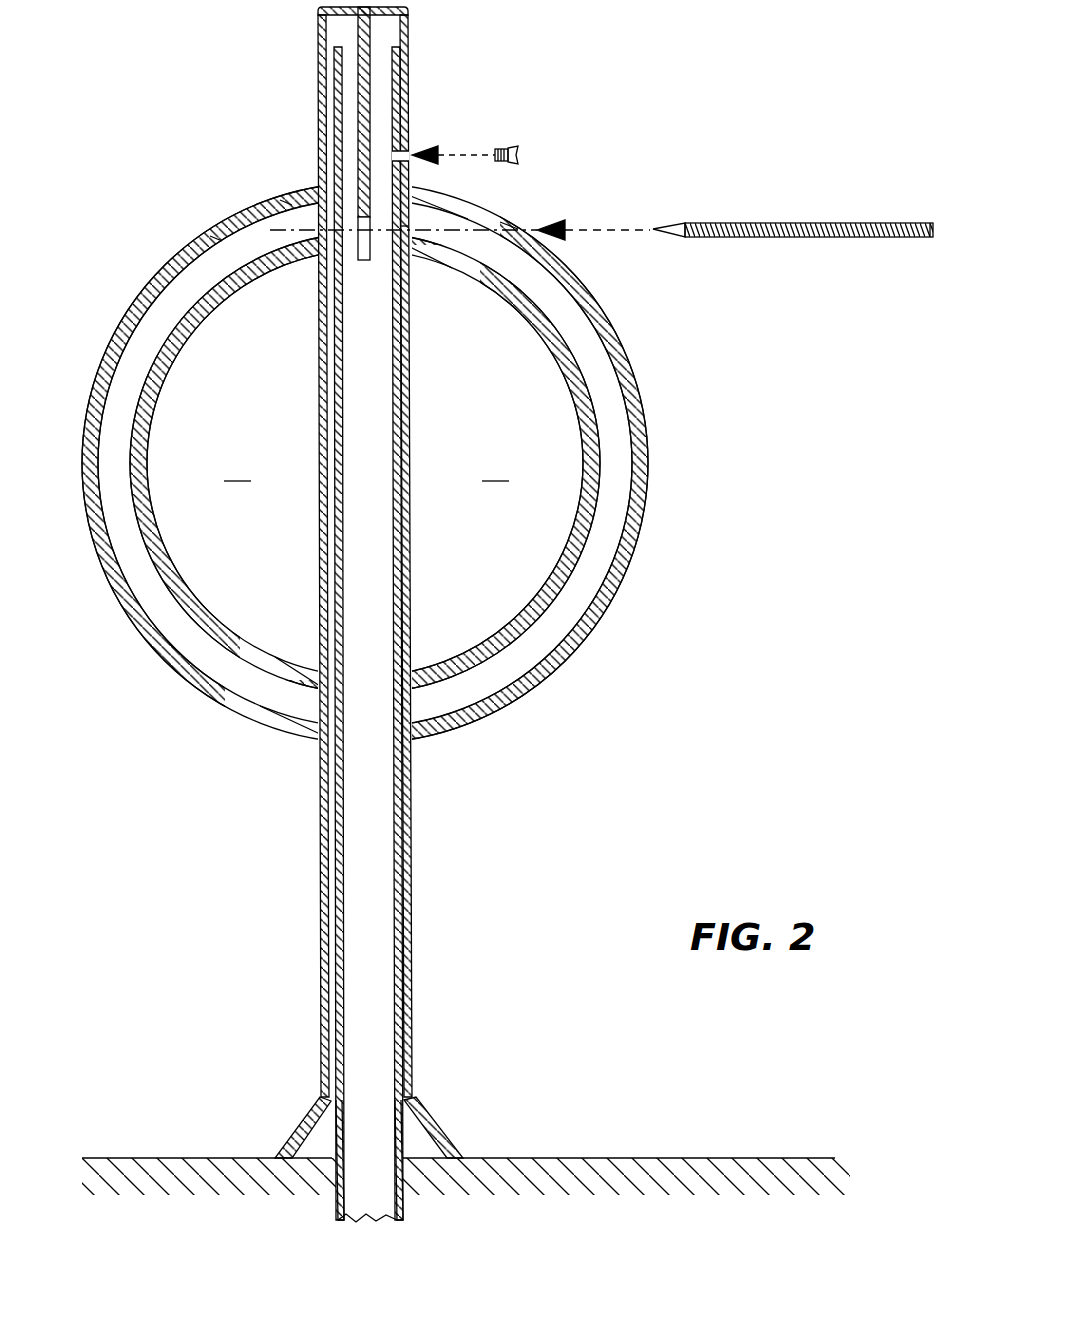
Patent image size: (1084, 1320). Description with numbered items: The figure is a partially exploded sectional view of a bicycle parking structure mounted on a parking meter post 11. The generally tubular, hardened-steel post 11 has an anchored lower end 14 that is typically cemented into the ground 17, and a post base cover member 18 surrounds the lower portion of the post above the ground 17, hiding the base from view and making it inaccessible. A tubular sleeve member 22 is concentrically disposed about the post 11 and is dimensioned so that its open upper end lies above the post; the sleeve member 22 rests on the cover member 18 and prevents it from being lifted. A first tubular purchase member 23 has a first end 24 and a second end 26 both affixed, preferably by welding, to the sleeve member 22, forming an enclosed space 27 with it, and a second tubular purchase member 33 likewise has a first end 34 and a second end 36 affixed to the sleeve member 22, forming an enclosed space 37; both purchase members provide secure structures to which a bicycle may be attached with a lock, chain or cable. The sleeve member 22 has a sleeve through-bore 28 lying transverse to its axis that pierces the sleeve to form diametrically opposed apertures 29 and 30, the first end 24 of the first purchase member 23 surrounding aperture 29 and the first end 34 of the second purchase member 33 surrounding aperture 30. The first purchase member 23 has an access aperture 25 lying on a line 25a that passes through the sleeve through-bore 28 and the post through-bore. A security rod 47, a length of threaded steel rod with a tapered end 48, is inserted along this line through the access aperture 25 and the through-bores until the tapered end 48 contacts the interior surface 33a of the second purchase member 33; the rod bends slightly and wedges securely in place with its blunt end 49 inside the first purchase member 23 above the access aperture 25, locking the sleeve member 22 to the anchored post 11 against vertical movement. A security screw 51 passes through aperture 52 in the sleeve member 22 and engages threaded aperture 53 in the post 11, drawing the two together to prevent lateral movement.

The parking meter post 11 is at (384, 866).
The anchored lower end 14 is at (403, 1196).
The ground 17 is at (485, 1158).
The post base cover member 18 is at (424, 1108).
The tubular sleeve member 22 is at (412, 808).
The first tubular purchase member 23 is at (652, 492).
The first end 24 is at (410, 193).
The access aperture 25 is at (520, 226).
The line 25a is at (286, 205).
The second end 26 is at (410, 678).
The enclosed space 27 is at (496, 470).
The sleeve through-bore 28 is at (430, 250).
The aperture 29 is at (411, 230).
The aperture 30 is at (317, 243).
The second tubular purchase member 33 is at (120, 322).
The interior surface 33a is at (206, 248).
The first end 34 is at (320, 196).
The second end 36 is at (318, 672).
The enclosed space 37 is at (238, 470).
The security rod 47 is at (793, 210).
The tapered end 48 is at (663, 225).
The blunt end 49 is at (932, 230).
The security screw 51 is at (520, 150).
The aperture 52 is at (410, 152).
The threaded aperture 53 is at (388, 157).